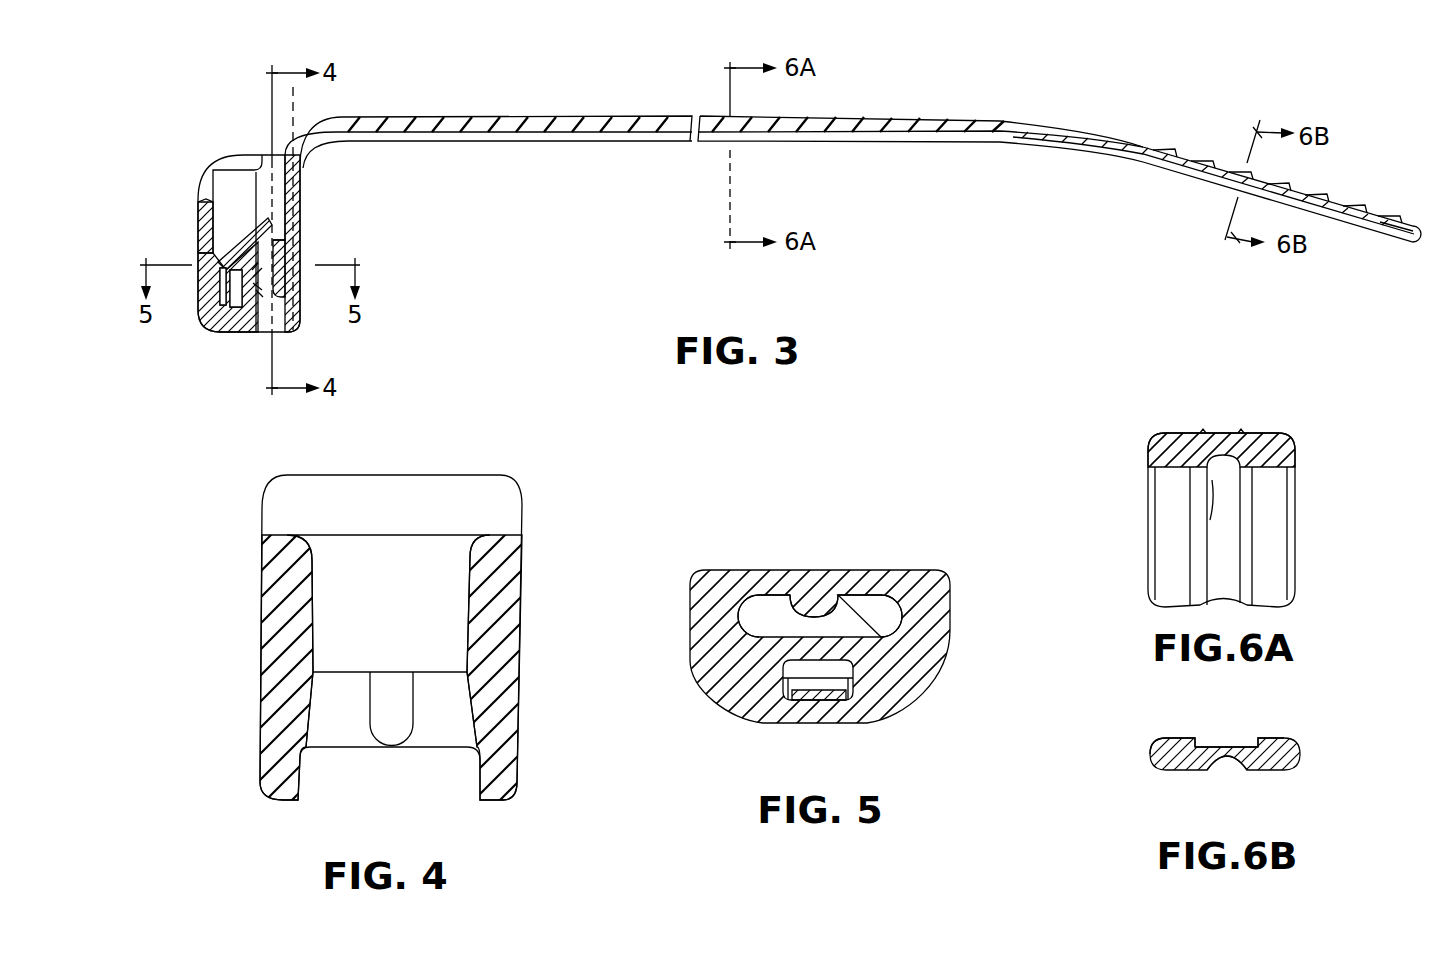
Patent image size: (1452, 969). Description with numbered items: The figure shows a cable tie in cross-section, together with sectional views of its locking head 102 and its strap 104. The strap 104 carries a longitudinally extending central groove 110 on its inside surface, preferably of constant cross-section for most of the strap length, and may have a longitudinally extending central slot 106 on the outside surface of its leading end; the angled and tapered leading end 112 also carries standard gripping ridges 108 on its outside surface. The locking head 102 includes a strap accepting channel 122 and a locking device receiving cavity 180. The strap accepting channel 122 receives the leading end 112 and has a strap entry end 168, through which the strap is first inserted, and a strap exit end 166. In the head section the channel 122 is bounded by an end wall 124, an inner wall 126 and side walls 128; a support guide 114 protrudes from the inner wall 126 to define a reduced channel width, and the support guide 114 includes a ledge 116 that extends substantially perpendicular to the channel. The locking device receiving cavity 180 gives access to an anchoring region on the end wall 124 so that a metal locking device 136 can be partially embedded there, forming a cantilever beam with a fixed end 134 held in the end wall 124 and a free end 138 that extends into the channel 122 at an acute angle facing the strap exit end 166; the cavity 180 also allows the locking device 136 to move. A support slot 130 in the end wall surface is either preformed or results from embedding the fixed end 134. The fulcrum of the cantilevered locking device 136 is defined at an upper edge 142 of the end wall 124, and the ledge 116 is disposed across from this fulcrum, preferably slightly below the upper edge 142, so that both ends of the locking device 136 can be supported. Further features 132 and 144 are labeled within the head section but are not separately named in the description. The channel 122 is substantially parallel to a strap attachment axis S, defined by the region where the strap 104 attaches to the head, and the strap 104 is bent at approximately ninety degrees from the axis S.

In FIG. 4, the locking head 102 is at (522, 695).
In FIG. 3, the strap 104 is at (555, 117).
In FIG. 4, the strap 104 is at (424, 475).
In FIG. 6A, the strap 104 is at (1270, 442).
In FIG. 6B, the strap 104 is at (1293, 752).
In FIG. 6B, the central slot 106 is at (1233, 745).
In FIG. 3, the gripping ridges 108 is at (1323, 190).
In FIG. 6B, the gripping ridges 108 is at (1180, 738).
In FIG. 3, the central groove 110 is at (590, 141).
In FIG. 6A, the central groove 110 is at (1212, 470).
In FIG. 6B, the central groove 110 is at (1220, 757).
In FIG. 3, the leading end 112 is at (1397, 217).
In FIG. 6A, the leading end 112 is at (1278, 550).
In FIG. 6B, the leading end 112 is at (1163, 750).
In FIG. 3, the support guide 114 is at (253, 277).
In FIG. 4, the support guide 114 is at (393, 740).
In FIG. 5, the support guide 114 is at (790, 615).
In FIG. 3, the ledge 116 is at (287, 250).
In FIG. 4, the ledge 116 is at (383, 671).
In FIG. 3, the strap accepting channel 122 is at (277, 177).
In FIG. 4, the strap accepting channel 122 is at (360, 557).
In FIG. 5, the strap accepting channel 122 is at (880, 603).
In FIG. 3, the end wall 124 is at (205, 230).
In FIG. 5, the end wall 124 is at (870, 703).
In FIG. 3, the inner wall 126 is at (295, 185).
In FIG. 4, the inner wall 126 is at (342, 732).
In FIG. 5, the inner wall 126 is at (825, 577).
In FIG. 4, the side walls 128 is at (265, 650).
In FIG. 5, the side walls 128 is at (698, 610).
In FIG. 3, the support slot 130 is at (223, 297).
In FIG. 3, the slot 132 is at (236, 307).
In FIG. 3, the fixed end 134 is at (220, 270).
In FIG. 3, the metal locking device 136 is at (252, 232).
In FIG. 3, the free end 138 is at (273, 220).
In FIG. 3, the upper edge 142 is at (252, 270).
In FIG. 3, the hinge 144 is at (263, 297).
In FIG. 3, the strap exit end 166 is at (262, 145).
In FIG. 4, the strap exit end 166 is at (452, 518).
In FIG. 3, the strap entry end 168 is at (253, 283).
In FIG. 4, the strap entry end 168 is at (437, 780).
In FIG. 3, the locking device receiving cavity 180 is at (239, 188).
In FIG. 3, the strap attachment axis S is at (296, 108).